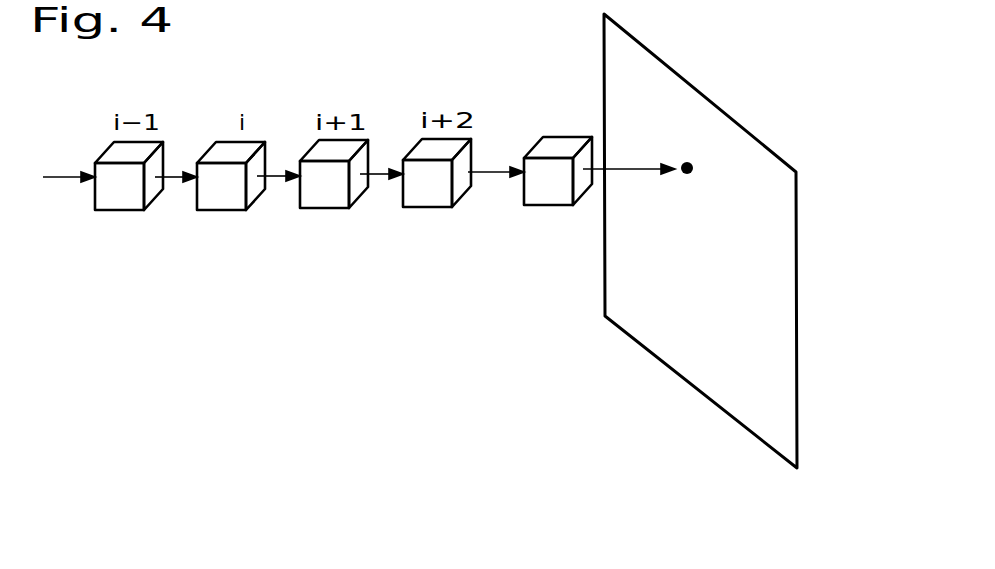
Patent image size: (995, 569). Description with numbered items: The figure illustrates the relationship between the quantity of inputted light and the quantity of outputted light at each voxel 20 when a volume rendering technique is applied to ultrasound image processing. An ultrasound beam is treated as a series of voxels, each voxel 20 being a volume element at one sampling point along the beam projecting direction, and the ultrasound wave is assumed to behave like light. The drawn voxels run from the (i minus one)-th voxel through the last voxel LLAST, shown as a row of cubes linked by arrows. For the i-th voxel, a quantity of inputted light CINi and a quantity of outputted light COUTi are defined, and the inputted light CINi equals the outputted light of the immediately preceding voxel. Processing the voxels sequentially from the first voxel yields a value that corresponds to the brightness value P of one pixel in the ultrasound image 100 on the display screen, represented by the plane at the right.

The voxel 20 is at (250, 148).
The ultrasound image 100 is at (675, 66).
The last voxel LLAST is at (555, 154).
The quantity of inputted light CINi is at (175, 178).
The quantity of outputted light COUTi is at (273, 177).
The brightness value P(x,y) P is at (731, 185).